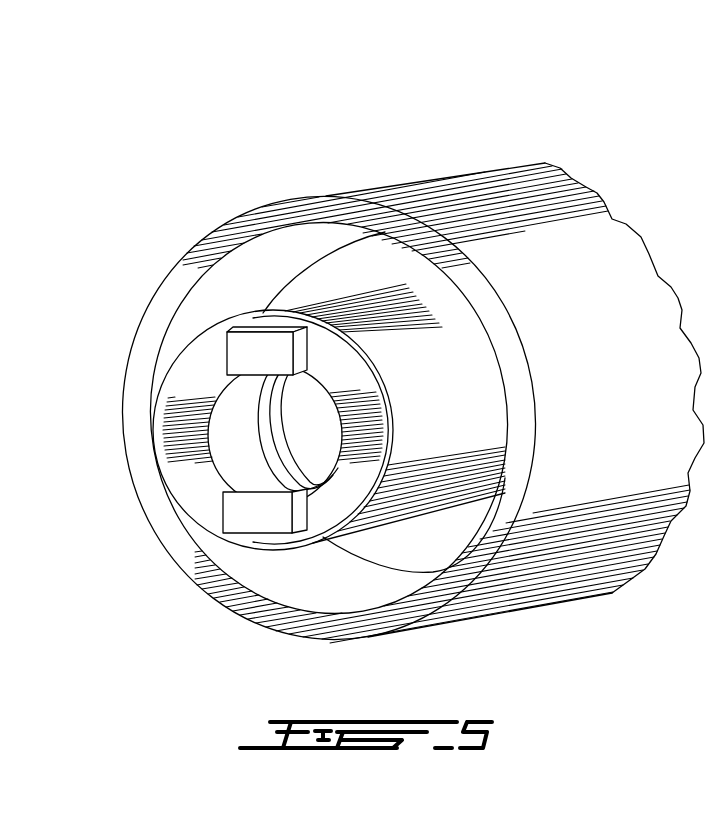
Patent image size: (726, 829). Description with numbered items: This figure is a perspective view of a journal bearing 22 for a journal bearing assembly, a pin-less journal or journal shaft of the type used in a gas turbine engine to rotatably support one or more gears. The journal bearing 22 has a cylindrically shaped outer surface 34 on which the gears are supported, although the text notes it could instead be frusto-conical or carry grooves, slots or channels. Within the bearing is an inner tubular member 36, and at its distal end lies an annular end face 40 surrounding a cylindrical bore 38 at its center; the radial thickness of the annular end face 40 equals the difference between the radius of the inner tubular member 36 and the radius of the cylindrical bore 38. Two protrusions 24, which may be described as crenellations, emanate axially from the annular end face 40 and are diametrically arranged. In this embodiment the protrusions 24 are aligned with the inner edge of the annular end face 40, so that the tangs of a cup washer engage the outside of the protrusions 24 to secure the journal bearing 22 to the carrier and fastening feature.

The journal bearing 22 is at (377, 352).
The protrusions 24 is at (242, 350).
The outer surface 34 is at (487, 183).
The inner tubular member 36 is at (410, 322).
The cylindrical bore 38 is at (232, 403).
The annular end face 40 is at (190, 452).